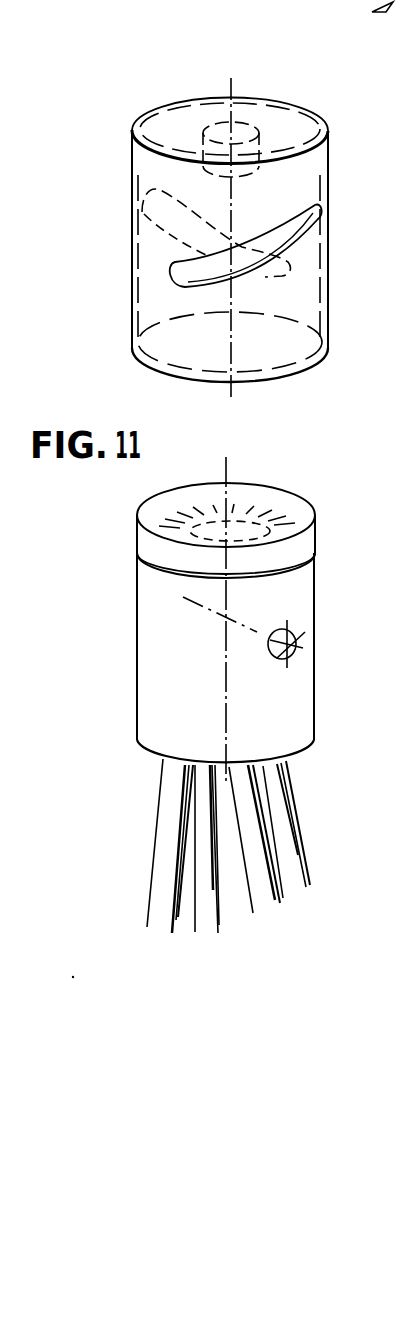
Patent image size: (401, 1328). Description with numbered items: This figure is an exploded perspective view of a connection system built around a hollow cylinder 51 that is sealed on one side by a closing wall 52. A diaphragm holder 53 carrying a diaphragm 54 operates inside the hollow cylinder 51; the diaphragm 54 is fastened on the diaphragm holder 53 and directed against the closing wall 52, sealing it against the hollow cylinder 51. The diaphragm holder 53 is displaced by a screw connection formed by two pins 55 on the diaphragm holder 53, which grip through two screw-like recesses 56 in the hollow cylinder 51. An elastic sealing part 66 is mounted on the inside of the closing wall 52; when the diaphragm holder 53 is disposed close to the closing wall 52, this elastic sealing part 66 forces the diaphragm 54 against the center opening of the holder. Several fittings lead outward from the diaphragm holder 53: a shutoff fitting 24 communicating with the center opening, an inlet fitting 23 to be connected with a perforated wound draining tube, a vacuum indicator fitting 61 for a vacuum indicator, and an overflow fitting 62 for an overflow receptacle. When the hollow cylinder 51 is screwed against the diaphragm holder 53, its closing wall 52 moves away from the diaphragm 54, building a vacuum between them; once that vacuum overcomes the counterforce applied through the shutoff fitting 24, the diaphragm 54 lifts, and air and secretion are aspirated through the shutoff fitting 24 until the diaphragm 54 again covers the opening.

The hollow cylinder 51 is at (318, 298).
The closing wall 52 is at (278, 122).
The elastic sealing part 66 is at (202, 147).
The screw-like recesses 56 is at (292, 233).
The diaphragm 54 is at (293, 505).
The diaphragm holder 53 is at (153, 710).
The pins 55 is at (290, 660).
The inlet fitting 23 is at (167, 860).
The shutoff fitting 24 is at (263, 903).
The vacuum indicator fitting 61 is at (205, 930).
The overflow fitting 62 is at (278, 792).